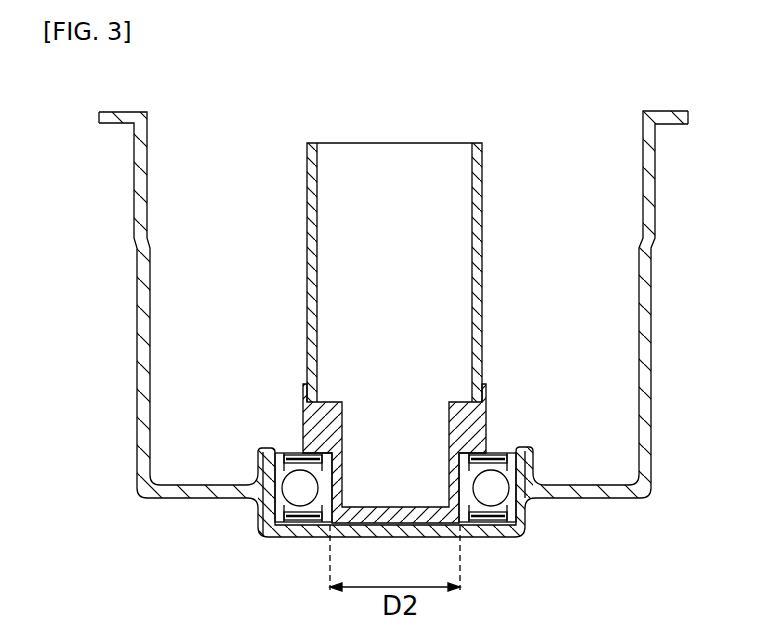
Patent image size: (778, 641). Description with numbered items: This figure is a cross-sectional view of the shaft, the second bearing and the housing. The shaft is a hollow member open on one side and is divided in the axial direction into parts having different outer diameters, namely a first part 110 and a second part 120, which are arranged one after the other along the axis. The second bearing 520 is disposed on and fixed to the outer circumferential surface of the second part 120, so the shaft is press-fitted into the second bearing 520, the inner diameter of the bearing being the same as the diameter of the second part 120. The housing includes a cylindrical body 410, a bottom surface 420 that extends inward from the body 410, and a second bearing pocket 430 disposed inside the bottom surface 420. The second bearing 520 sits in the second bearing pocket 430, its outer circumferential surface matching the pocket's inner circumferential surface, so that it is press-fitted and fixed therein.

The first part 110 is at (482, 293).
The second part 120 is at (487, 418).
The body 410 is at (136, 305).
The bottom surface 420 is at (178, 498).
The second bearing pocket 430 is at (298, 533).
The second bearing 520 is at (508, 503).